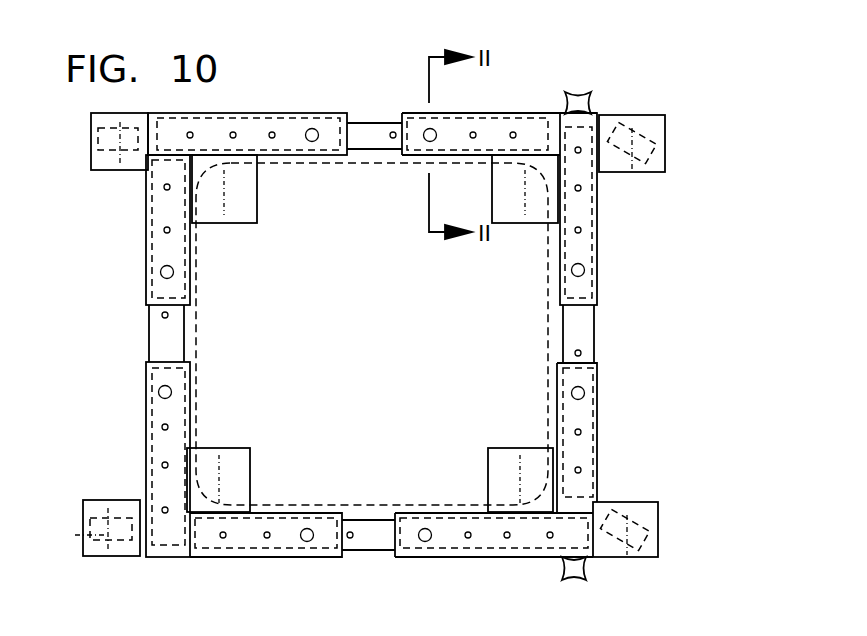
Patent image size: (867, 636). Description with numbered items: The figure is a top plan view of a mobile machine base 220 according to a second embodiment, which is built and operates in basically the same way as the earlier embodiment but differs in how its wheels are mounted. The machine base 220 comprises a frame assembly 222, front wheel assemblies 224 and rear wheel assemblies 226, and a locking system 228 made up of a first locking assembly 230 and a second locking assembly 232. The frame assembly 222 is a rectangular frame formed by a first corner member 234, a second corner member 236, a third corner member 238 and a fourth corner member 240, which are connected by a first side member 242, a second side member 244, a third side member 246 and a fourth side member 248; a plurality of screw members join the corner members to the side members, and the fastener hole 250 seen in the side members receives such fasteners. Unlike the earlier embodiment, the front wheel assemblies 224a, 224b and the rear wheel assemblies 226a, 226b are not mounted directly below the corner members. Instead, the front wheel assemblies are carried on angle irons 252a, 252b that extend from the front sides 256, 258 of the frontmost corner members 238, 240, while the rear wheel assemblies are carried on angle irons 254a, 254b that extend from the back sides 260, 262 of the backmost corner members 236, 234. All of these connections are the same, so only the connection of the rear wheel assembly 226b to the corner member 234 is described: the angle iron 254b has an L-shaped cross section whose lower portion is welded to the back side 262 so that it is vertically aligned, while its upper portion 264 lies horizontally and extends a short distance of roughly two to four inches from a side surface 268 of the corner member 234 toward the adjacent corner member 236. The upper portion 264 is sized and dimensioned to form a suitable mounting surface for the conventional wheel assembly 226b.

The mobile machine base 220 is at (690, 180).
The frame assembly 222 is at (640, 296).
The front wheel assemblies 224 is at (678, 203).
The front wheel assembly 224a is at (664, 106).
The front wheel assembly 224b is at (670, 497).
The rear wheel assemblies 226 is at (113, 300).
The rear wheel assembly 226a is at (92, 181).
The rear wheel assembly 226b is at (97, 488).
The locking system 228 is at (600, 568).
The first locking assembly 230 is at (594, 586).
The second locking assembly 232 is at (592, 88).
The first corner member 234 is at (160, 556).
The second corner member 236 is at (146, 223).
The third corner member 238 is at (598, 218).
The fourth corner member 240 is at (598, 386).
The first side member 242 is at (157, 338).
The second side member 244 is at (376, 140).
The third side member 246 is at (582, 337).
The fourth side member 248 is at (368, 540).
The fastener hole 250 is at (422, 130).
The angle iron 252a is at (670, 130).
The angle iron 252b is at (665, 523).
The angle iron 254a is at (106, 183).
The angle iron 254b is at (111, 488).
The front side 256 is at (598, 245).
The front side 258 is at (598, 412).
The back side 260 is at (146, 203).
The back side 262 is at (144, 393).
The upper portion 264 is at (91, 500).
The side surface 268 is at (245, 557).